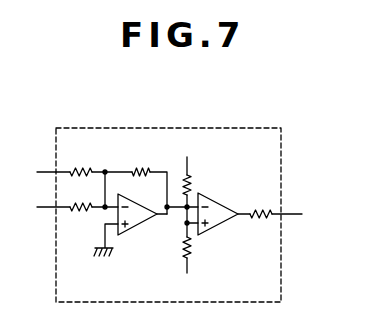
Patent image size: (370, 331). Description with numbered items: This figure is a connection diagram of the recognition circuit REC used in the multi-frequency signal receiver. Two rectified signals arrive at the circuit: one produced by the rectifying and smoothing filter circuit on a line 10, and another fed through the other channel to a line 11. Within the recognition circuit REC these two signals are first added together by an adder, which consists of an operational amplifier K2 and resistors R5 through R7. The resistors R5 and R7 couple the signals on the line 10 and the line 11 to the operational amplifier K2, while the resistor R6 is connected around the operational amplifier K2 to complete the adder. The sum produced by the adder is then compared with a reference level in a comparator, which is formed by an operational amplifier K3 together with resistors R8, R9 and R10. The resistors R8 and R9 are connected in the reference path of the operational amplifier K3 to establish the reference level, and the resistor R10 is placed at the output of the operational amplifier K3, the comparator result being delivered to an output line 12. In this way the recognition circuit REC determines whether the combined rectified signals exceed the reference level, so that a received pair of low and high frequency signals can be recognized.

The line 10 is at (46, 171).
The line 11 is at (44, 208).
The output terminal 12 is at (292, 213).
The resistor R5 is at (81, 161).
The resistor R6 is at (149, 180).
The resistor R7 is at (81, 196).
The resistor R8 is at (192, 180).
The resistor R9 is at (192, 248).
The resistor R10 is at (264, 202).
The operational amplifier K2 is at (132, 224).
The operational amplifier K3 is at (222, 214).
The recognition circuit REC is at (247, 137).